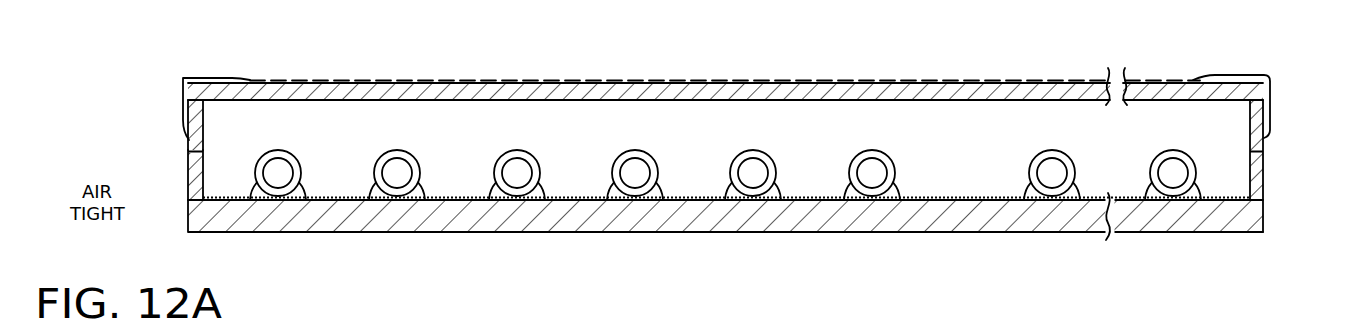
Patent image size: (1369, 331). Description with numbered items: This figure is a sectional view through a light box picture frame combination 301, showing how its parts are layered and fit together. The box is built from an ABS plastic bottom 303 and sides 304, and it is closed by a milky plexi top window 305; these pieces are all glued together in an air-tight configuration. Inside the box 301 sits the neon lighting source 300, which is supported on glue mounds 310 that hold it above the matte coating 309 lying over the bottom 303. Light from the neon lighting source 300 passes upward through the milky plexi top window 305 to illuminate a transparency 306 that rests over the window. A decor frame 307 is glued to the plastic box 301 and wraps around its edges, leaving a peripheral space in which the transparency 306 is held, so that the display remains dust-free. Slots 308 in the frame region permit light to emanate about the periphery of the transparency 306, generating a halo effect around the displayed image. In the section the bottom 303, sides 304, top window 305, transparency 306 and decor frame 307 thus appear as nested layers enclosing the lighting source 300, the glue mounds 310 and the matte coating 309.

The neon lighting source 300 is at (527, 160).
The light box picture frame combination 301 is at (1272, 134).
The ABS plastic bottom 303 is at (327, 233).
The sides 304 is at (204, 108).
The milky plexi top window 305 is at (1165, 128).
The transparency 306 is at (335, 82).
The decor frame 307 is at (184, 67).
The slots 308 is at (204, 154).
The matte coating 309 is at (318, 199).
The glue mounds 310 is at (422, 198).